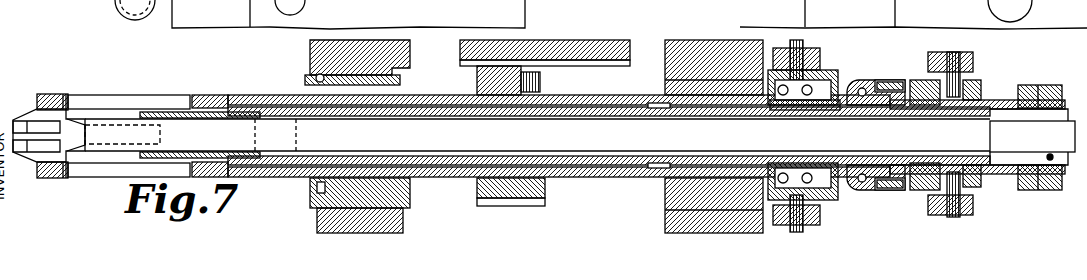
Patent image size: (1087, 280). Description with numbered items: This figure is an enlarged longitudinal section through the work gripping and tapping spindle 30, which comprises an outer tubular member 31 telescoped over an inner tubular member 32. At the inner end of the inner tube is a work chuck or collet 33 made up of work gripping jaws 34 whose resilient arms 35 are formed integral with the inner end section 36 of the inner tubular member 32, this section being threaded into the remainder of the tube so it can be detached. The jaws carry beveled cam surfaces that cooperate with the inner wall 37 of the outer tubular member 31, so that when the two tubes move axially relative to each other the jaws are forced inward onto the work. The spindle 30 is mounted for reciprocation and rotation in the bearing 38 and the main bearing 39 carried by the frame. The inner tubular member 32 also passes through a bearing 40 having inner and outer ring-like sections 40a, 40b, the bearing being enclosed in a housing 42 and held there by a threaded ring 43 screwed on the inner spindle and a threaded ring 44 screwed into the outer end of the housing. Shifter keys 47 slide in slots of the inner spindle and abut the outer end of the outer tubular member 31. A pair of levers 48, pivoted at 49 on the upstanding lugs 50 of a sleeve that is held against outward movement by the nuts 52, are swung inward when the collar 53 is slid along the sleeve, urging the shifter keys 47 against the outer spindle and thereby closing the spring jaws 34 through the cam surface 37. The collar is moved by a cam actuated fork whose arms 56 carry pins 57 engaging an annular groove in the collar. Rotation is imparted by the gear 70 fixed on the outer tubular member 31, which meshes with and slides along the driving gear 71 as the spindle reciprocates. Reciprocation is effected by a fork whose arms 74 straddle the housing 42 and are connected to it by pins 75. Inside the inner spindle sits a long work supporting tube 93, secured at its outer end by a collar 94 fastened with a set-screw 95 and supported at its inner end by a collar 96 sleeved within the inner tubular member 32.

The work gripping and tapping spindle 30 is at (245, 95).
The outer tubular member 31 is at (434, 86).
The inner tubular member 32 is at (446, 177).
The work chuck or collet 33 is at (30, 160).
The work gripping jaws 34 is at (30, 116).
The resilient arms 35 is at (165, 112).
The inner end section 36 is at (206, 107).
The inner wall 37 is at (55, 114).
The bearing 38 is at (310, 66).
The main bearing 39 is at (665, 188).
The bearing 40 is at (778, 100).
The inner ring-like section 40a is at (810, 165).
The outer ring-like section 40b is at (820, 215).
The housing 42 is at (825, 72).
The threaded ring 43 is at (825, 108).
The threaded ring 44 is at (838, 195).
The shifter keys 47 is at (808, 108).
The levers 48 is at (908, 110).
The pivot 49 is at (863, 87).
The upstanding lugs 50 is at (870, 192).
The nuts 52 is at (1048, 85).
The collar 53 is at (915, 80).
The arms of the fork 56 is at (975, 62).
The pins 57 is at (982, 84).
The gear 70 is at (545, 190).
The gear 71 is at (585, 40).
The arms of the fork 74 is at (820, 62).
The pins 75 is at (806, 48).
The work supporting tube 93 is at (615, 140).
The collar 94 is at (1050, 160).
The set-screw 95 is at (1045, 140).
The collar 96 is at (283, 177).